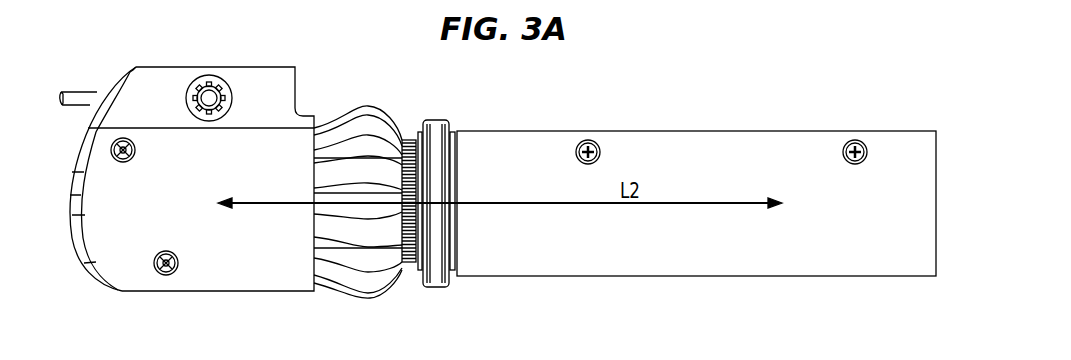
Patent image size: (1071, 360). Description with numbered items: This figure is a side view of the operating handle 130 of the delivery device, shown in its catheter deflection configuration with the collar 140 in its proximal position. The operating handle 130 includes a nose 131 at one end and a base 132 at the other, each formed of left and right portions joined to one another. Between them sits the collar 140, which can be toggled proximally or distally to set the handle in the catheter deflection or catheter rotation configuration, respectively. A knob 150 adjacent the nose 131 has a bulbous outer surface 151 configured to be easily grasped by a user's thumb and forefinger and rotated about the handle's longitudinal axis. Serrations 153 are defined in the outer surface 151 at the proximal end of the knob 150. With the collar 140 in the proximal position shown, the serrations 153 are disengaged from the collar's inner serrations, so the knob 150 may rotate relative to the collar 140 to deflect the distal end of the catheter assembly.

The operating handle 130 is at (835, 102).
The nose 131 is at (197, 67).
The base 132 is at (698, 130).
The collar 140 is at (436, 120).
The knob 150 is at (332, 118).
The bulbous outer surface 151 is at (375, 298).
The serrations 153 is at (406, 266).